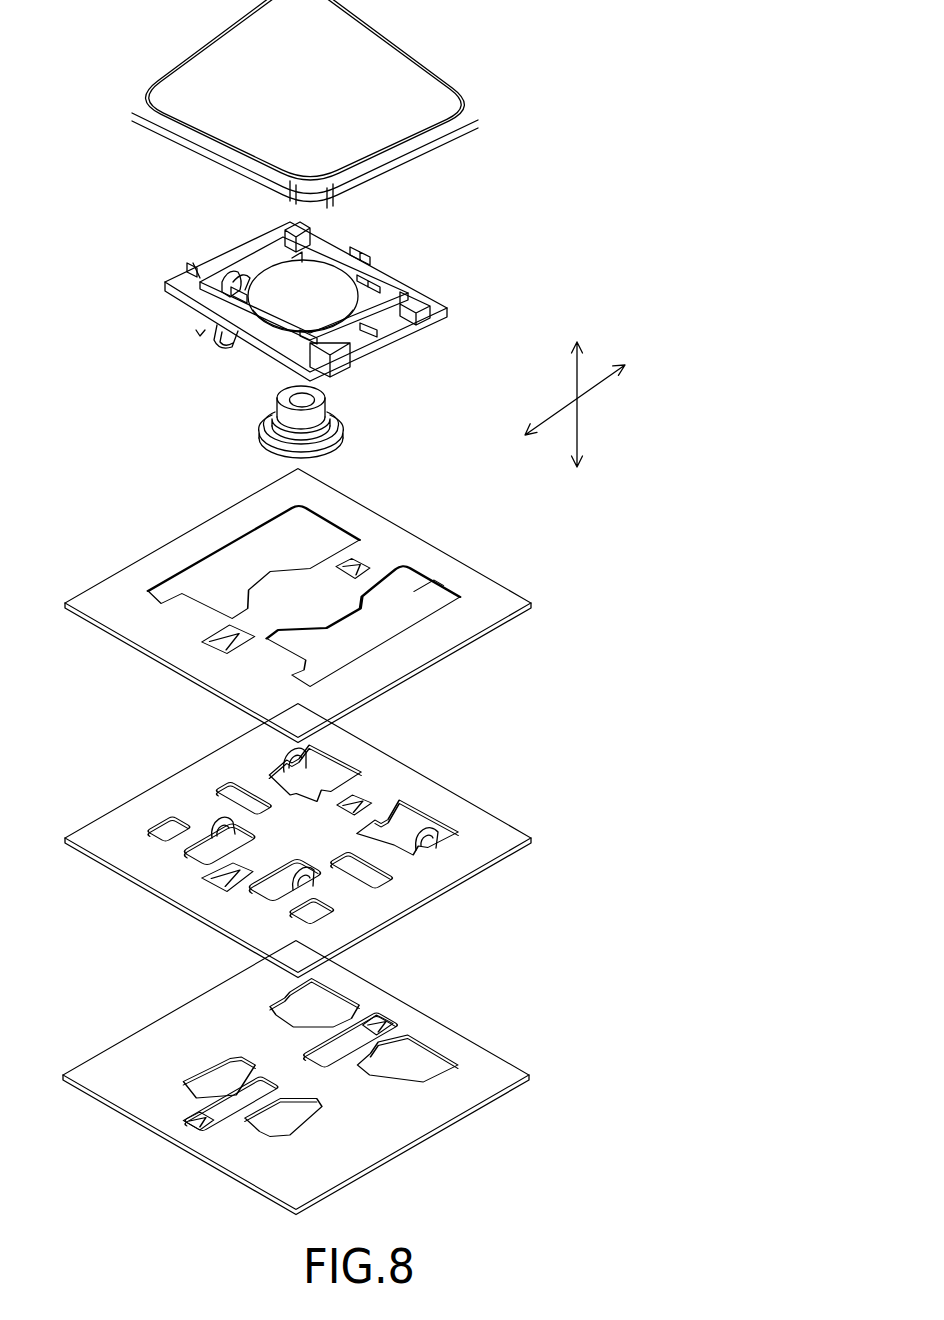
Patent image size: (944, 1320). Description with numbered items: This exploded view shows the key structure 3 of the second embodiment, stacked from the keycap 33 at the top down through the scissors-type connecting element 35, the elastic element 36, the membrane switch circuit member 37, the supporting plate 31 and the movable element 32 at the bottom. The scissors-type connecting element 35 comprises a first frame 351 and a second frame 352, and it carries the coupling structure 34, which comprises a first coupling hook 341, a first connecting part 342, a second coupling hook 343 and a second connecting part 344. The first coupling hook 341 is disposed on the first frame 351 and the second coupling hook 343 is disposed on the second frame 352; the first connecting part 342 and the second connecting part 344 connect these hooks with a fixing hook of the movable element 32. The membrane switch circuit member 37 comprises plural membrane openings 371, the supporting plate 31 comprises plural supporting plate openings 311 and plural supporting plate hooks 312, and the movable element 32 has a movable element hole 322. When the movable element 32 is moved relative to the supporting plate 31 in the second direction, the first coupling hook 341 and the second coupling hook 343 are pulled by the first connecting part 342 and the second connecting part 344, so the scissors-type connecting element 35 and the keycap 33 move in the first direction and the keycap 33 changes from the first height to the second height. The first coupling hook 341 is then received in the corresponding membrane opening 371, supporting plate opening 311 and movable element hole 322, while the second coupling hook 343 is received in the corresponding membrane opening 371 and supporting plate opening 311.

The key structure 3 is at (104, 32).
The keycap 33 is at (390, 67).
The coupling structure 34 is at (580, 70).
The first coupling hook 341 is at (218, 323).
The first connecting part 342 is at (200, 333).
The second coupling hook 343 is at (353, 252).
The second connecting part 344 is at (368, 262).
The scissors-type connecting element 35 is at (377, 259).
The first frame 351 is at (403, 313).
The second frame 352 is at (235, 278).
The elastic element 36 is at (333, 410).
The membrane switch circuit member 37 is at (298, 606).
The membrane opening 371 is at (367, 566).
The supporting plate 31 is at (291, 841).
The supporting plate opening 311 is at (217, 875).
The supporting plate hook 312 is at (209, 785).
The movable element 32 is at (296, 1078).
The movable element hole 322 is at (382, 1028).